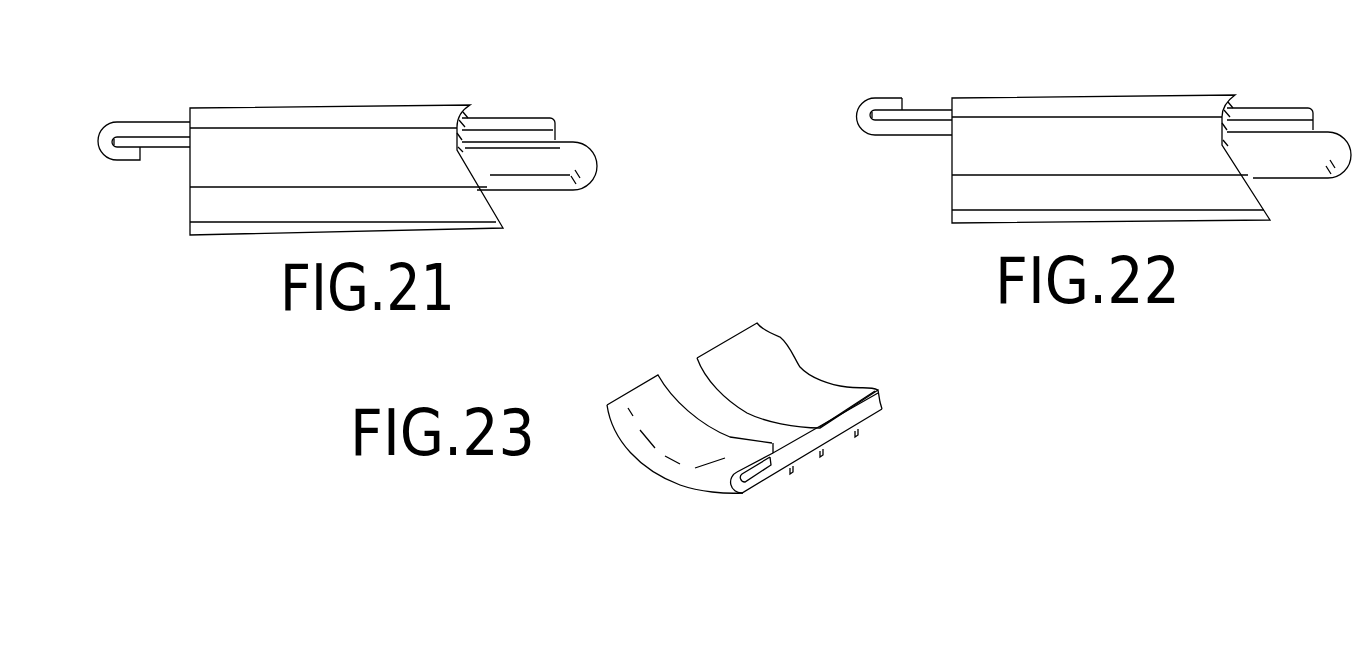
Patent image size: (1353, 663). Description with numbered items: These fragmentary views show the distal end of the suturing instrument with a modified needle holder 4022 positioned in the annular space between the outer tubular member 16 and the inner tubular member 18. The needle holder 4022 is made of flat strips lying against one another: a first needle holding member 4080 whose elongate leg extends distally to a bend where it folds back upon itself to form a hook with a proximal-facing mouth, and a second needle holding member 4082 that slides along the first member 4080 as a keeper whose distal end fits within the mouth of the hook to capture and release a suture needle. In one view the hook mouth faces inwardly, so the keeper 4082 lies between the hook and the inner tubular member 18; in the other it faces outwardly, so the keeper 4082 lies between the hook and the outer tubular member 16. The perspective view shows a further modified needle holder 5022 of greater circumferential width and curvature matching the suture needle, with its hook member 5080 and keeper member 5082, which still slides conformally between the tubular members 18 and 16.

In FIG. 21, the outer tubular member 16 is at (289, 106).
In FIG. 22, the outer tubular member 16 is at (1118, 93).
In FIG. 21, the inner tubular member 18 is at (565, 137).
In FIG. 22, the inner tubular member 18 is at (1325, 128).
In FIG. 21, the modified needle holder 4022 is at (153, 133).
In FIG. 22, the modified needle holder 4022 is at (912, 116).
In FIG. 21, the first needle holding member 4080 is at (126, 121).
In FIG. 22, the first needle holding member 4080 is at (855, 133).
In FIG. 21, the second needle holding member 4082 is at (167, 151).
In FIG. 22, the second needle holding member 4082 is at (930, 109).
In FIG. 23, the modified needle holder 5022 is at (693, 374).
In FIG. 23, the curved front piece with fold 5080 is at (638, 383).
In FIG. 23, the curved rear piece 5082 is at (708, 357).